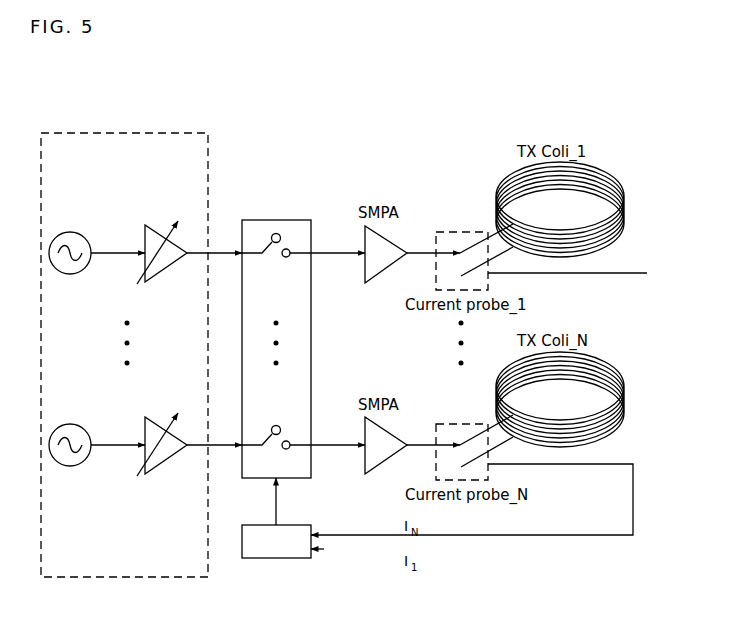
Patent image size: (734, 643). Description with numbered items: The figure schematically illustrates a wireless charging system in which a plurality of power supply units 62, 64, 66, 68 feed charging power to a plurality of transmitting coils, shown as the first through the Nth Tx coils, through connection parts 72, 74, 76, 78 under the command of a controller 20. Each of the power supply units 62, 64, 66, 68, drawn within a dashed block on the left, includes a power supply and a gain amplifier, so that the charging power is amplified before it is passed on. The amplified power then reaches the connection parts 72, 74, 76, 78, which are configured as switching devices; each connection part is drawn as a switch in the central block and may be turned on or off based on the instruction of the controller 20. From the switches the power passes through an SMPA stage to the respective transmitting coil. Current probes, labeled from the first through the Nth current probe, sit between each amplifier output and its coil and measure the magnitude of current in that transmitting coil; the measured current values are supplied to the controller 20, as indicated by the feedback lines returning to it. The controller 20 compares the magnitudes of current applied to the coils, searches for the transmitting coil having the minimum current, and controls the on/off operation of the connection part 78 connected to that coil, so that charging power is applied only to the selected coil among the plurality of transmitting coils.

The power supply unit 62 is at (141, 328).
The power supply unit 64 is at (141, 328).
The power supply unit 66 is at (141, 328).
The power supply unit 68 is at (134, 131).
The connection part 72 is at (292, 318).
The connection part 74 is at (292, 318).
The connection part 76 is at (292, 318).
The connection part 78 is at (276, 219).
The controller 20 is at (276, 560).